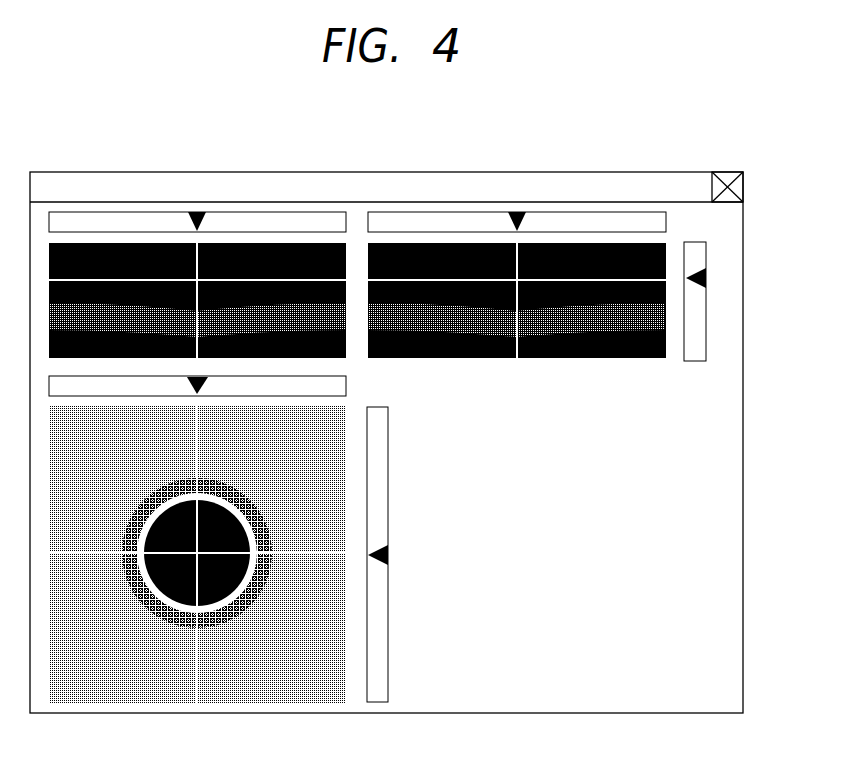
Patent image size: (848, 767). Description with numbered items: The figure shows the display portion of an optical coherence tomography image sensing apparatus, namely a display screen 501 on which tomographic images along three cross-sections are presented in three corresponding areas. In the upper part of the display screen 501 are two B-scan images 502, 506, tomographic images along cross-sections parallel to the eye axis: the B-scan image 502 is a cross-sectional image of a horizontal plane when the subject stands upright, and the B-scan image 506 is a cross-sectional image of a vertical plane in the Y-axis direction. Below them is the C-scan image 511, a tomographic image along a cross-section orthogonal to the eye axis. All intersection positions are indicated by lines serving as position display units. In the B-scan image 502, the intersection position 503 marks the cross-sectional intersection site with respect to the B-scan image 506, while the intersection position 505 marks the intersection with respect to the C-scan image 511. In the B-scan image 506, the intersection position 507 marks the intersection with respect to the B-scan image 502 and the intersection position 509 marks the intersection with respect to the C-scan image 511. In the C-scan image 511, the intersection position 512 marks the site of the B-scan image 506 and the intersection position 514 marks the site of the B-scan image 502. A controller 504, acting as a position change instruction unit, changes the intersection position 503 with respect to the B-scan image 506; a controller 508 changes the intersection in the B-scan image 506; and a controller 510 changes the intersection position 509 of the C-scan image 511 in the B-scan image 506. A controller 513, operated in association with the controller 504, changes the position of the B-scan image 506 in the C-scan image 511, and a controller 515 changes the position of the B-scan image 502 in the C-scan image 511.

The display screen 501 is at (728, 393).
The B-scan image 502 is at (309, 246).
The intersection position 503 is at (199, 258).
The controller 504 is at (197, 212).
The intersection position 505 is at (328, 279).
The B-scan image 506 is at (629, 246).
The intersection position 507 is at (520, 261).
The controller 508 is at (516, 212).
The intersection position 509 is at (650, 278).
The controller 510 is at (706, 278).
The C-scan image 511 is at (325, 505).
The intersection position 512 is at (200, 429).
The controller 513 is at (208, 387).
The intersection position 514 is at (331, 557).
The controller 515 is at (388, 556).